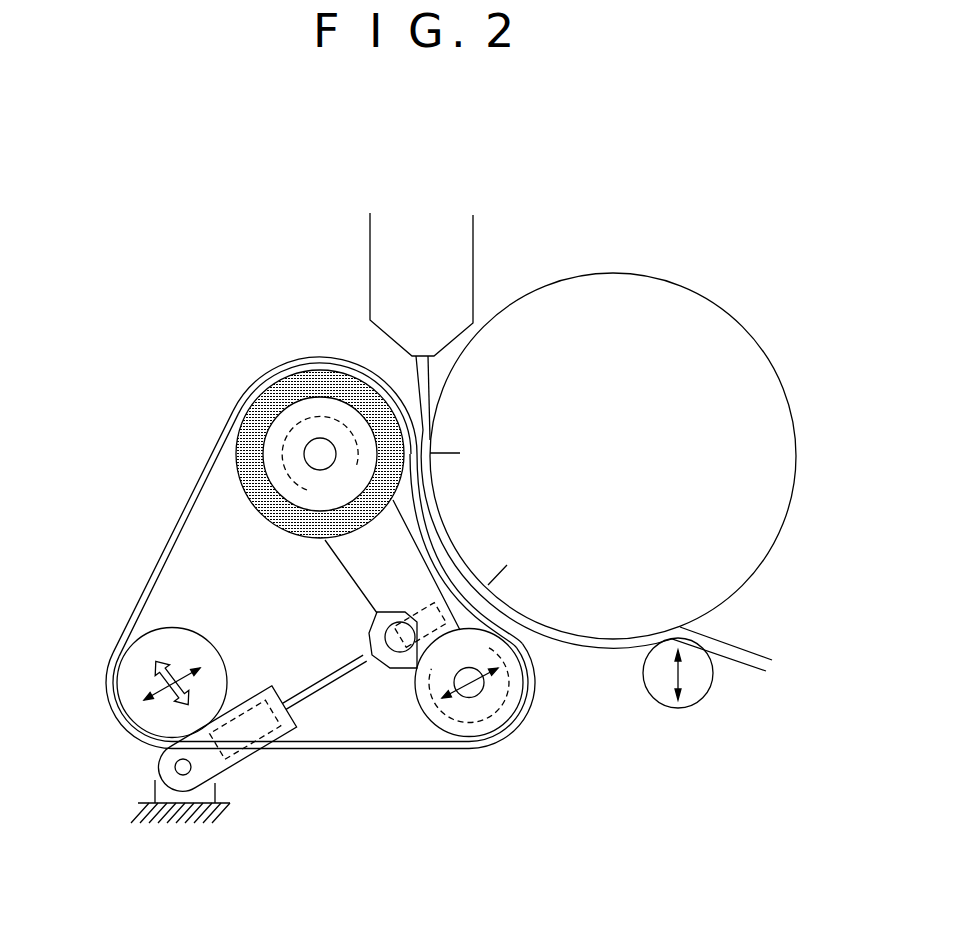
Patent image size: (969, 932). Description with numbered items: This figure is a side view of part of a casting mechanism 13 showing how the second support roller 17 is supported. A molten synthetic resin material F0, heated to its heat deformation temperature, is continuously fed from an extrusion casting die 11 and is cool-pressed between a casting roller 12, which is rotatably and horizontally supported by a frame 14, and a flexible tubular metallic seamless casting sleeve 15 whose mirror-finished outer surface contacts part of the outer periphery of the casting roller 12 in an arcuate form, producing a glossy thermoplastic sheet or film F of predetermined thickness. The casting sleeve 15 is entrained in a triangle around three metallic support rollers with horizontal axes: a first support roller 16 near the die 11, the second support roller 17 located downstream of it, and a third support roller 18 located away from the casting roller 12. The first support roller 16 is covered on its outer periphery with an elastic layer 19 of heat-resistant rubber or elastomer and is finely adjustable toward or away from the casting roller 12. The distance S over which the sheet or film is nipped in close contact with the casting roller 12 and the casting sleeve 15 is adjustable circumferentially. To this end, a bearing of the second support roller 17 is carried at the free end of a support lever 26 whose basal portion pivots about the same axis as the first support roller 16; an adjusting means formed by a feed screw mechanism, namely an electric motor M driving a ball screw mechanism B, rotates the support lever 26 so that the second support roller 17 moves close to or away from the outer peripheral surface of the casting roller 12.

The extrusion casting die 11 is at (385, 258).
The casting roller 12 is at (697, 340).
The casting mechanism 13 is at (512, 283).
The frame 14 is at (152, 800).
The casting sleeve 15 is at (158, 585).
The first support roller 16 is at (283, 483).
The second support roller 17 is at (433, 713).
The third support roller 18 is at (148, 690).
The elastic layer 19 is at (283, 395).
The support lever 26 is at (405, 665).
The electric motor M is at (265, 730).
The ball screw mechanism B is at (336, 695).
The sheet or film F is at (737, 648).
The synthetic resin material F0 is at (420, 378).
The distance S is at (452, 460).